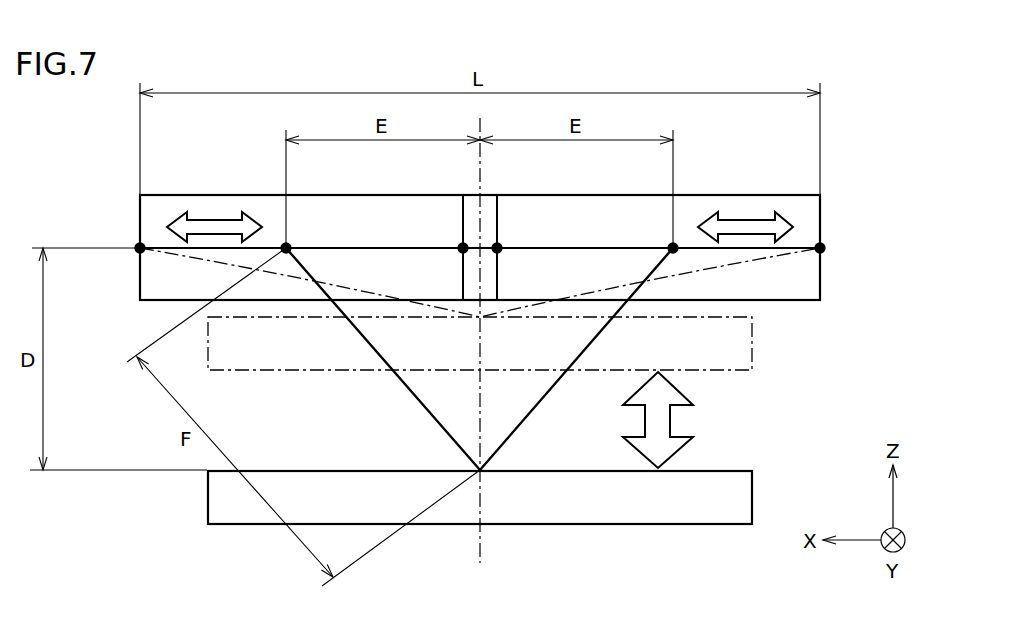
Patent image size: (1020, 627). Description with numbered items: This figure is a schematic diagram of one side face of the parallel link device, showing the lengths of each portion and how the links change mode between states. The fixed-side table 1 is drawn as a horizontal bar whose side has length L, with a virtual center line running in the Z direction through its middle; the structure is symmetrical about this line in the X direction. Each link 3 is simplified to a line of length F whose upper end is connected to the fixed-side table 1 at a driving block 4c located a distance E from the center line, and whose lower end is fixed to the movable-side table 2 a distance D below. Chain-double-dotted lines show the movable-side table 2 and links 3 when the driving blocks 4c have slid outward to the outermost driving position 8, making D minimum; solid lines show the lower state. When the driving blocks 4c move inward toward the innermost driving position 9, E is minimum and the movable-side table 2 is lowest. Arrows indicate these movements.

The fixed-side table 1 is at (746, 205).
The movable-side table 2 is at (720, 343).
The link 3 is at (218, 262).
The driving block 4c is at (286, 248).
The outermost driving position 8 is at (140, 248).
The innermost driving position 9 is at (462, 247).